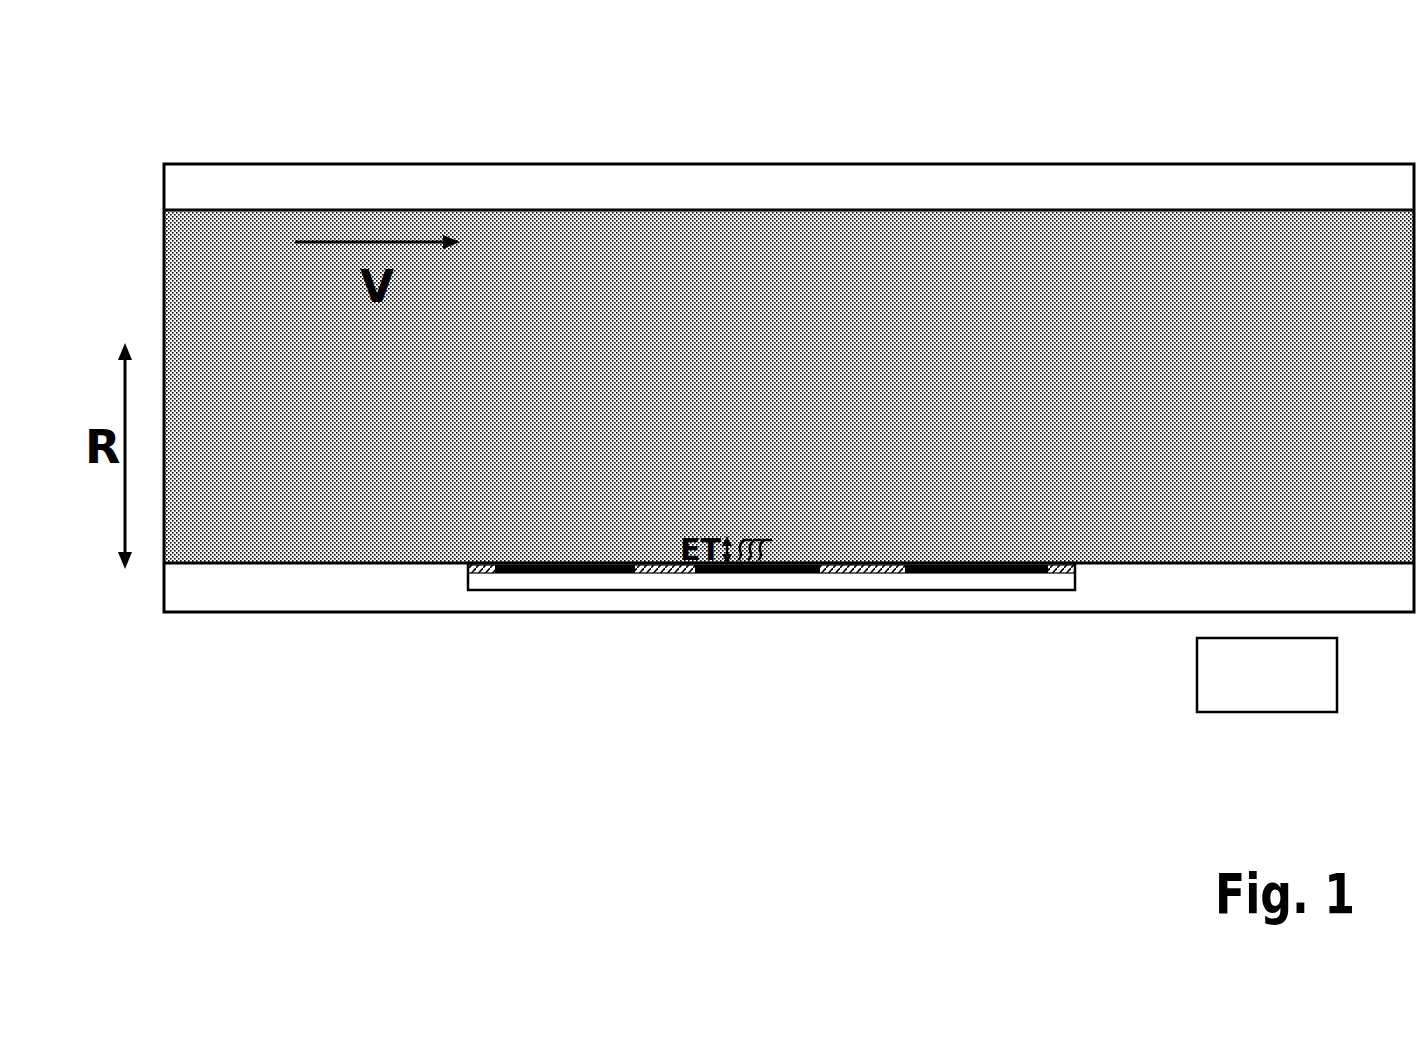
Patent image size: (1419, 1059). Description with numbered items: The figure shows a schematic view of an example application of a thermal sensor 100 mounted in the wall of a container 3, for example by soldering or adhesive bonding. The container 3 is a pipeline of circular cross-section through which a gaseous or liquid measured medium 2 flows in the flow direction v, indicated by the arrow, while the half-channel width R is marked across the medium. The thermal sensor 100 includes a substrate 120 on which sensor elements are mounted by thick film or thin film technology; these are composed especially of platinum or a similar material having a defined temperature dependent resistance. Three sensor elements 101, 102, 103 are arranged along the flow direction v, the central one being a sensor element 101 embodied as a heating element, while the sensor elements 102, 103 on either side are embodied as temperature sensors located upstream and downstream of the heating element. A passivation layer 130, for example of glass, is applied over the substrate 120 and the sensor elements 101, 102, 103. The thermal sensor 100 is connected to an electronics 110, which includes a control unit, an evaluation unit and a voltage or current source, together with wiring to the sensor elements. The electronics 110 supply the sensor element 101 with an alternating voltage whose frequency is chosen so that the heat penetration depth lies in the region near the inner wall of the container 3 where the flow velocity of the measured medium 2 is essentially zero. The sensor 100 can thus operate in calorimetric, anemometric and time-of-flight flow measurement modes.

The measured medium 2 is at (1088, 228).
The container 3 is at (543, 163).
The thermal sensor 100 is at (723, 656).
The sensor element 101 is at (800, 573).
The sensor element 102 is at (530, 590).
The sensor element 103 is at (985, 573).
The electronics 110 is at (1075, 580).
The substrate 120 is at (1045, 590).
The passivation layer 130 is at (468, 572).